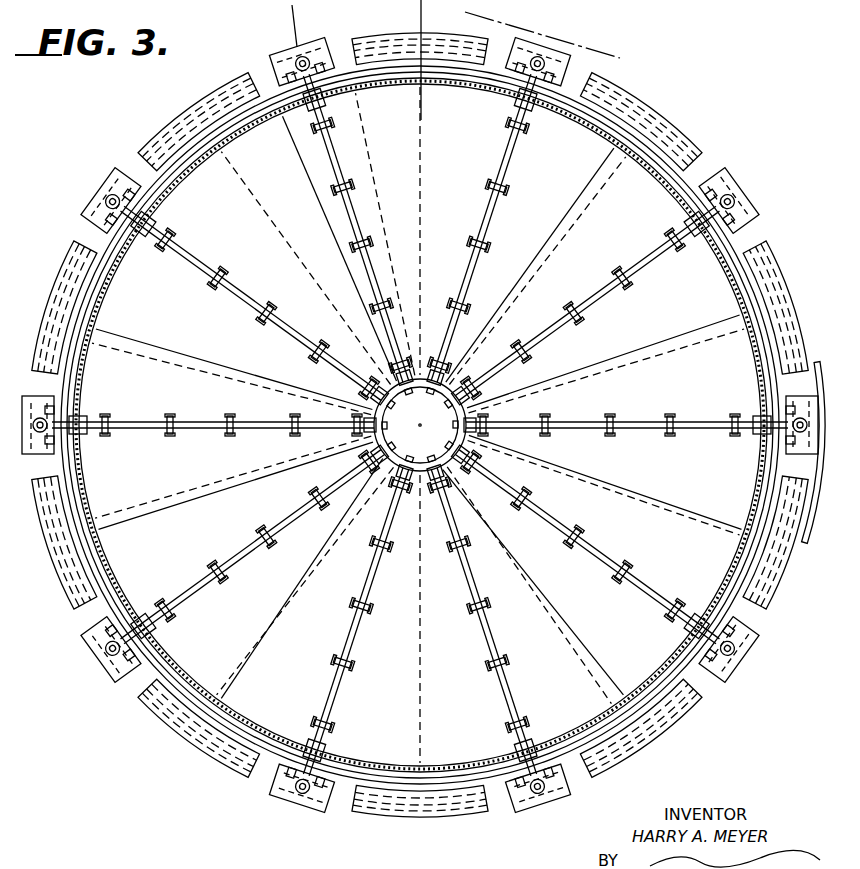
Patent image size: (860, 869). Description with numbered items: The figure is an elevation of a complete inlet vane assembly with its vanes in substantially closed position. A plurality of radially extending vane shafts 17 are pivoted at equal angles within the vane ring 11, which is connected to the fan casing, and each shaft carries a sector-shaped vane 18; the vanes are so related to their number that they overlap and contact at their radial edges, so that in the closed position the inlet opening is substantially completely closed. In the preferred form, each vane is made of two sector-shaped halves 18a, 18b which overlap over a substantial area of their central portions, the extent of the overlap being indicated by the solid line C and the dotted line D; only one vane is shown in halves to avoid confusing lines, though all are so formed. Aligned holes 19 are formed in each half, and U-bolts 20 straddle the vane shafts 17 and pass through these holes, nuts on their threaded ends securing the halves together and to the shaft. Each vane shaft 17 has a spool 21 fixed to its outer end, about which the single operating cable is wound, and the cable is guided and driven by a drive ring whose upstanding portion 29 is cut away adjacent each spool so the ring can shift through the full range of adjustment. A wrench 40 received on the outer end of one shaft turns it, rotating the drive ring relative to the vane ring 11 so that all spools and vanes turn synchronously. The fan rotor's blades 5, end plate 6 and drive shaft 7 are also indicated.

The blades 5 is at (270, 33).
The end plate 6 is at (446, 11).
The drive shaft 7 is at (470, 31).
The vane ring 11 is at (667, 180).
The vane shafts 17 is at (420, 425).
The sector-shaped vane 18 is at (537, 191).
The sector-shaped vane half 18a is at (308, 250).
The sector-shaped vane half 18b is at (385, 234).
The aligned holes 19 is at (476, 242).
The U-bolts 20 is at (341, 188).
The spool 21 is at (552, 56).
The upstanding portion 29 is at (670, 114).
The wrench 40 is at (820, 523).
The solid line C is at (340, 248).
The dotted line D is at (385, 234).